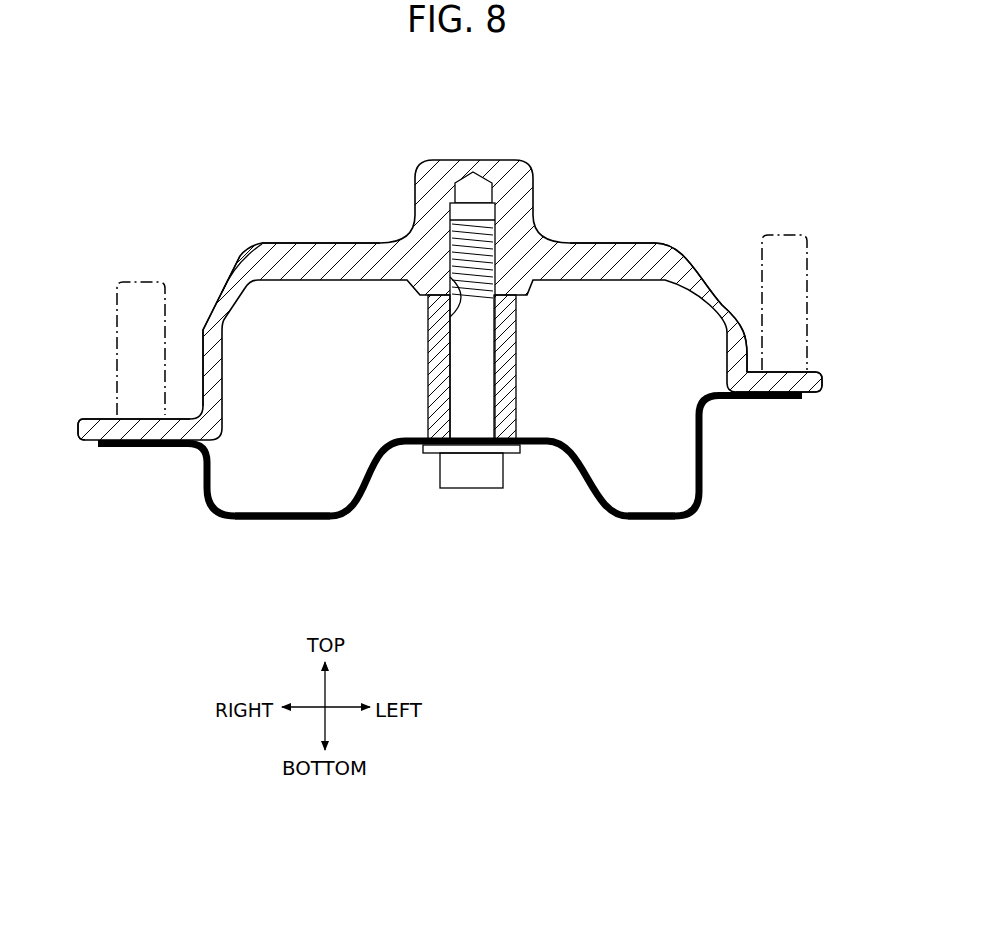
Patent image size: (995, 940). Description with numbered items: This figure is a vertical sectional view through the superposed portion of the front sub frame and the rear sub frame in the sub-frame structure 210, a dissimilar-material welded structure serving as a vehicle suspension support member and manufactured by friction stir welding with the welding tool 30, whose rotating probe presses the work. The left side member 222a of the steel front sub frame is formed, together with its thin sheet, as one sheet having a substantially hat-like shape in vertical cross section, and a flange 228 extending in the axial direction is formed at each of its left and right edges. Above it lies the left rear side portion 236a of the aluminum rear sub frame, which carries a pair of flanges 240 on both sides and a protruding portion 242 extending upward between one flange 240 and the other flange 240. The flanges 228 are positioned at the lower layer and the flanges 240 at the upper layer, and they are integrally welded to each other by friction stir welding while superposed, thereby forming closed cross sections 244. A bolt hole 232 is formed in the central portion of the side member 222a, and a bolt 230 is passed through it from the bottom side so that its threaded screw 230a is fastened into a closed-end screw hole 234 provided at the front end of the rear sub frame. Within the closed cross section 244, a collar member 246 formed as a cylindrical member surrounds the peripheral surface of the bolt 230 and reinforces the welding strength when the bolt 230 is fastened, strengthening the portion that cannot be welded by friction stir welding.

The sub-frame structure 210 is at (690, 208).
The welding tool 30 is at (108, 319).
The left rear side portion 236a is at (337, 242).
The protruding portion 242 is at (203, 323).
The threaded screw 230a is at (527, 197).
The collar member 246 is at (510, 342).
The closed-end screw hole 234 is at (426, 313).
The bolt 230 is at (478, 361).
The flange 240 is at (95, 418).
The flange 228 is at (137, 447).
The closed cross section 244 is at (283, 483).
The bolt hole 232 is at (460, 447).
The left side member 222a is at (644, 528).